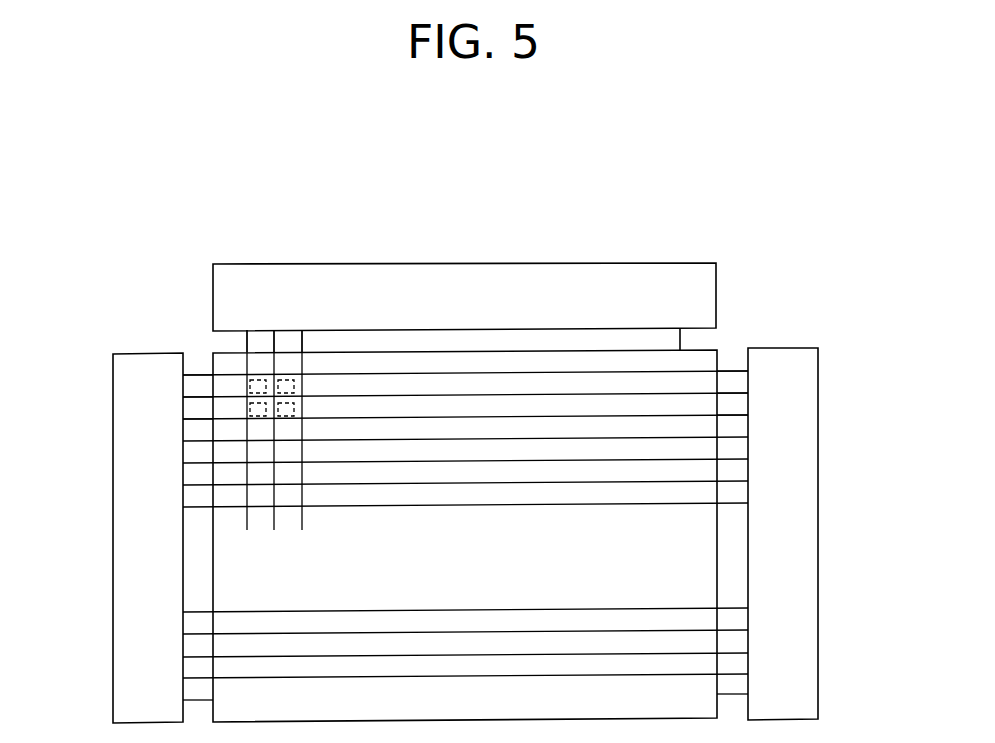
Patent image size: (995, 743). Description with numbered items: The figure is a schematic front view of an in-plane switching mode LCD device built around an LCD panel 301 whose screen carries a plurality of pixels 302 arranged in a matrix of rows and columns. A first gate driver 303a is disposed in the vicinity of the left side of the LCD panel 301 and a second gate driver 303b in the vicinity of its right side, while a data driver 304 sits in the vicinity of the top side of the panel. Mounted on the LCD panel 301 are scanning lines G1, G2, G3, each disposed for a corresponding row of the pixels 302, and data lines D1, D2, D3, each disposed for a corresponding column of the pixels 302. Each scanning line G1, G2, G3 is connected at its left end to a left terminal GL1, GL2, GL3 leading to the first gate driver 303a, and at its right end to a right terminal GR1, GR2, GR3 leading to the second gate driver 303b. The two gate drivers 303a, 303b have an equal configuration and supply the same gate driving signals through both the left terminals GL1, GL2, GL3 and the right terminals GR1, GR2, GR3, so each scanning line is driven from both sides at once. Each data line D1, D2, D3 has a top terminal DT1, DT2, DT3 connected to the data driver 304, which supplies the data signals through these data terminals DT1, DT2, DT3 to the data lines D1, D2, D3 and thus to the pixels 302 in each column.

The LCD panel 301 is at (470, 350).
The pixel 302 is at (257, 380).
The first gate driver 303a is at (113, 592).
The second gate driver 303b is at (818, 592).
The data driver 304 is at (562, 262).
The left terminal GL1 is at (208, 375).
The left terminal GL2 is at (213, 396).
The left terminal GL3 is at (213, 419).
The scanning line G1 is at (192, 375).
The scanning line G2 is at (200, 398).
The scanning line G3 is at (200, 419).
The right terminal GR1 is at (718, 372).
The right terminal GR2 is at (718, 394).
The right terminal GR3 is at (730, 416).
The data line D1 is at (247, 341).
The data line D2 is at (276, 336).
The data line D3 is at (303, 336).
The top terminal DT1 is at (262, 340).
The top terminal DT2 is at (276, 347).
The top terminal DT3 is at (303, 347).